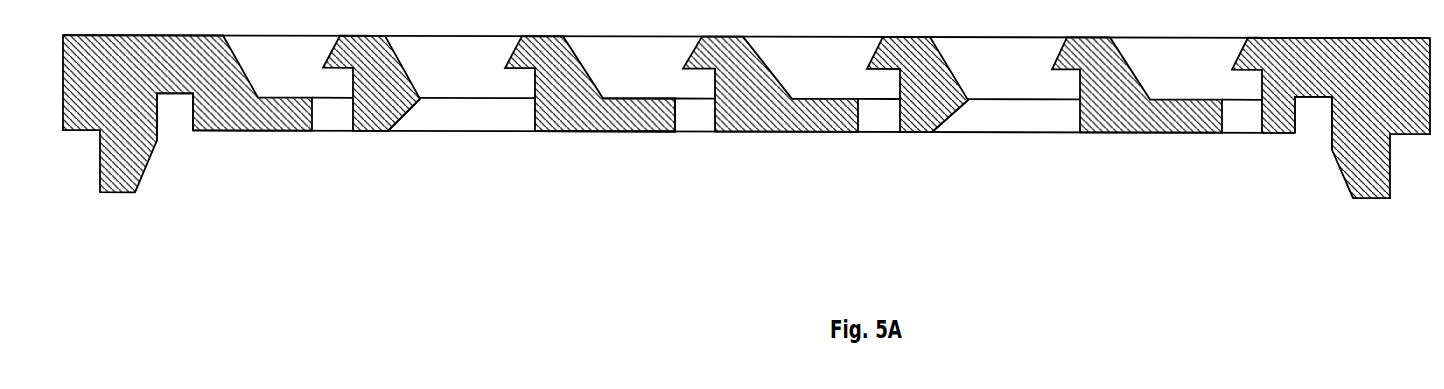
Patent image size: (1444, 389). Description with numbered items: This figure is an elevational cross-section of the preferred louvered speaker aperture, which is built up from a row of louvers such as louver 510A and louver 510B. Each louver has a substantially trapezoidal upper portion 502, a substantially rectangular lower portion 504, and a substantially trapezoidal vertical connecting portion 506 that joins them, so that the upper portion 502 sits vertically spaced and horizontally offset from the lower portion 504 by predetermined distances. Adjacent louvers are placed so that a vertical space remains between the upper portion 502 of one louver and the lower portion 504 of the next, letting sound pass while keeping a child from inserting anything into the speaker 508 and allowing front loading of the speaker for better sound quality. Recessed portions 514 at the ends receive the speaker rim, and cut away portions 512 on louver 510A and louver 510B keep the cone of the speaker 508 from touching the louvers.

The upper portion 502 is at (545, 35).
The lower portion 504 is at (614, 132).
The vertical connecting portion 506 is at (773, 73).
The speaker 508 is at (1394, 191).
The louver 510A is at (358, 35).
The louver 510B is at (914, 35).
The cut away portion 512 is at (395, 120).
The recessed portion 514 is at (172, 108).